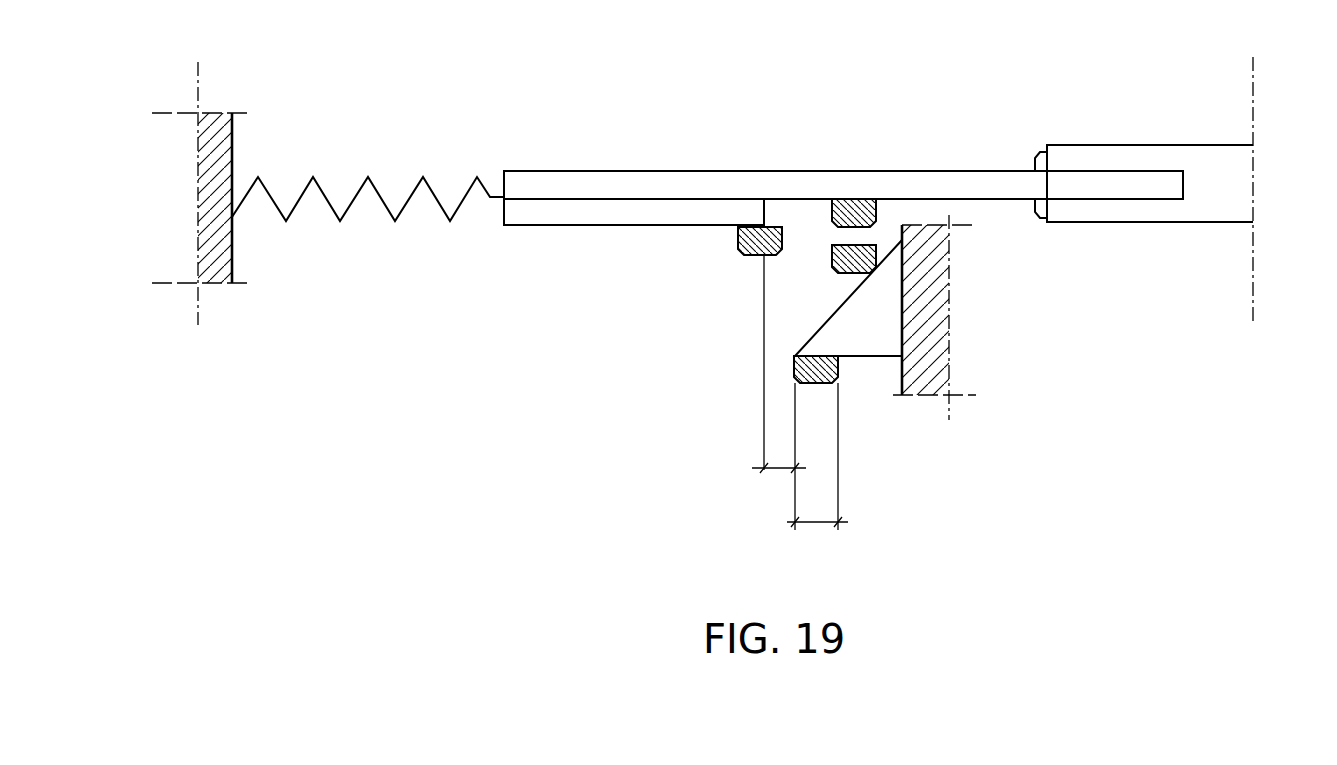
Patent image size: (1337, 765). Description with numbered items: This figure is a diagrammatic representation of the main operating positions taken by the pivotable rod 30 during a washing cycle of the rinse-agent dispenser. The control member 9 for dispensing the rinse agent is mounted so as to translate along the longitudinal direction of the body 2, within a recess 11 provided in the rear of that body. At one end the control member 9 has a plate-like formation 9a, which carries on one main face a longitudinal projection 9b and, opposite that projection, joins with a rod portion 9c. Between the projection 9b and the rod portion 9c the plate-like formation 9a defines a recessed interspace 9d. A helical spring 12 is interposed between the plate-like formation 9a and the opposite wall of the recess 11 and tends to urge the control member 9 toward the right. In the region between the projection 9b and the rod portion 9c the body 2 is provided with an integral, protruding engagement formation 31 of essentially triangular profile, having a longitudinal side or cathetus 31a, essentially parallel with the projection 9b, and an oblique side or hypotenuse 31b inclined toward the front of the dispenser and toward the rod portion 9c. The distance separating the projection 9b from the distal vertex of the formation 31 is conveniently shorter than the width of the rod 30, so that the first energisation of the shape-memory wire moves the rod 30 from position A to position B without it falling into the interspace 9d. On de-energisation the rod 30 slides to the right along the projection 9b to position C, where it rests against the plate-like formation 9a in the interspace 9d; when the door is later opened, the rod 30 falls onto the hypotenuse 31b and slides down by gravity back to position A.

The body 2 is at (900, 375).
The control member 9 is at (878, 175).
The plate-like formation 9a is at (722, 171).
The longitudinal projection 9b is at (580, 225).
The rod portion 9c is at (1125, 145).
The recessed interspace 9d is at (985, 210).
The recess 11 is at (232, 245).
The helical spring 12 is at (378, 193).
The rod 30 is at (738, 232).
The engagement formation 31 is at (875, 316).
The longitudinal side or cathetus 31a is at (860, 356).
The oblique side or hypotenuse 31b is at (812, 326).